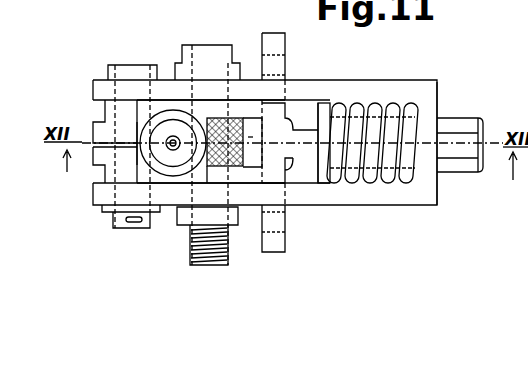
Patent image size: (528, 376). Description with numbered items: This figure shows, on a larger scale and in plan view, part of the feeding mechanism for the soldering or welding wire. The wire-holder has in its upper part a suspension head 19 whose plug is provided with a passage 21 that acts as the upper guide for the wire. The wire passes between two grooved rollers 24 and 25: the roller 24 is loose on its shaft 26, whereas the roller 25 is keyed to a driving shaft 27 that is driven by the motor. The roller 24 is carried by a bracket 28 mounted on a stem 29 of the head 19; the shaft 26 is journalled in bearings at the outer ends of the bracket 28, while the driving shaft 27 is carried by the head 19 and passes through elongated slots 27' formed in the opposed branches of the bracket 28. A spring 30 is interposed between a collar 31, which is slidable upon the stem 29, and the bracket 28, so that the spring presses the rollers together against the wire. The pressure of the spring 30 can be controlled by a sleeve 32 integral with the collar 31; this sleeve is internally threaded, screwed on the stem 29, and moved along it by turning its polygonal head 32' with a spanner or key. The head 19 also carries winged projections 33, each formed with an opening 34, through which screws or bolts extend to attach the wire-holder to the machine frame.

The suspension head 19 is at (272, 118).
The passage 21 is at (172, 146).
The grooved roller 24 is at (106, 155).
The grooved roller 25 is at (232, 123).
The shaft 26 is at (118, 221).
The driving shaft 27 is at (206, 262).
The elongated slots 27' is at (189, 152).
The bracket 28 is at (358, 88).
The stem 29 is at (307, 152).
The spring 30 is at (390, 108).
The collar 31 is at (327, 178).
The sleeve 32 is at (403, 173).
The polygonal head 32' is at (463, 166).
The winged projections 33 is at (272, 42).
The opening 34 is at (281, 57).